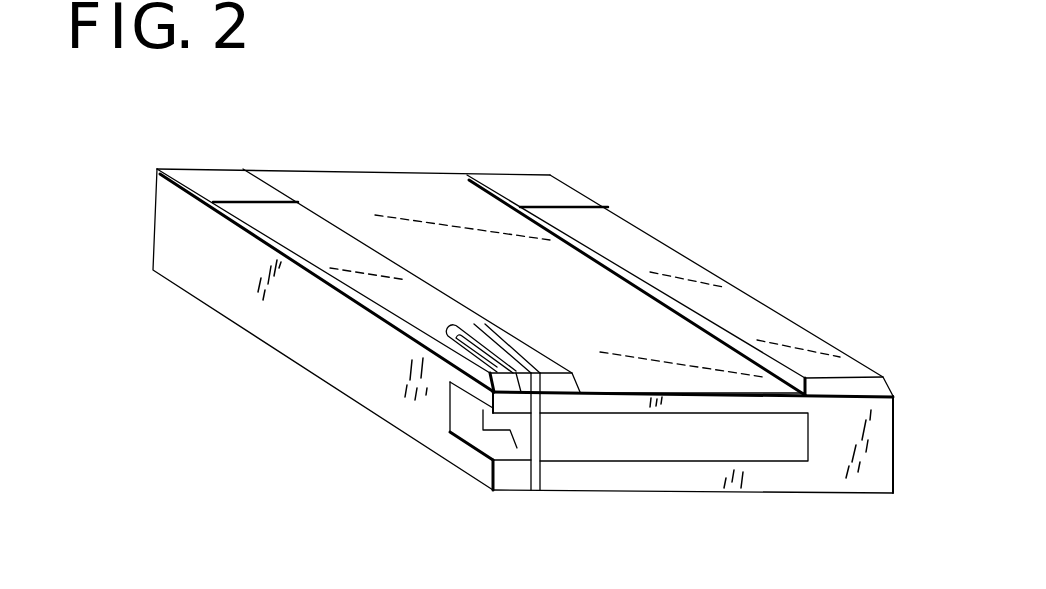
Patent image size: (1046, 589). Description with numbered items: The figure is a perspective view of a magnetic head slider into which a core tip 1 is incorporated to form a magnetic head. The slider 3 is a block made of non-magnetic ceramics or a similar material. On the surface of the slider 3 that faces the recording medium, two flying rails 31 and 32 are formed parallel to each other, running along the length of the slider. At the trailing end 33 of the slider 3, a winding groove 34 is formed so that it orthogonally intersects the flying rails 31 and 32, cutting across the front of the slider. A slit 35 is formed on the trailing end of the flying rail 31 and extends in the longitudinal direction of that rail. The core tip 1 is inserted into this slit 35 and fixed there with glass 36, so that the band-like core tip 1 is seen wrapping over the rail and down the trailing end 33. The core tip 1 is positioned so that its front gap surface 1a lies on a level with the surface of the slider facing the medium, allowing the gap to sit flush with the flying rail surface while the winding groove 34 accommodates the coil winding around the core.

The core tip 1 is at (530, 432).
The front gap surface 1a is at (528, 342).
The slider 3 is at (420, 213).
The flying rail 31 is at (302, 228).
The flying rail 32 is at (634, 258).
The trailing end 33 is at (688, 402).
The winding groove 34 is at (613, 442).
The slit 35 is at (452, 336).
The glass 36 is at (477, 333).